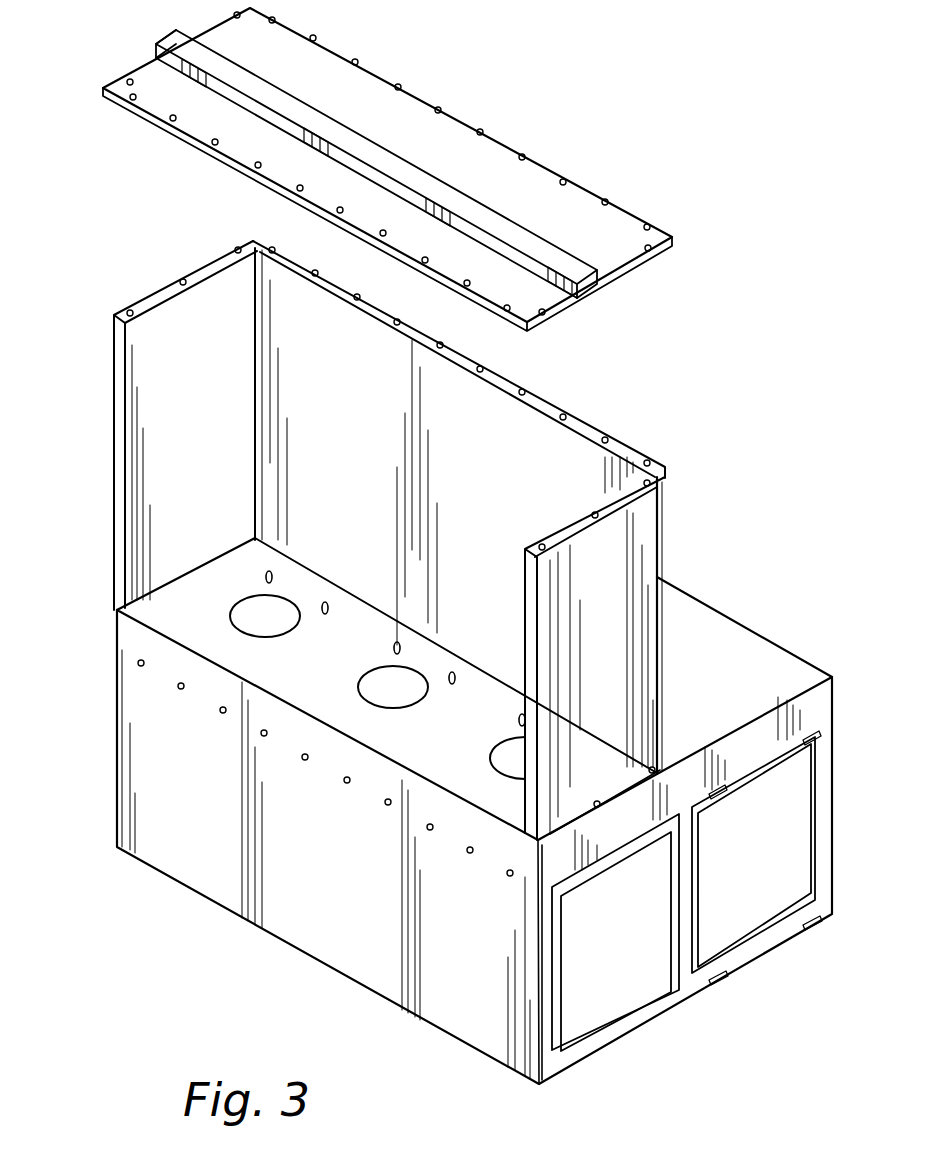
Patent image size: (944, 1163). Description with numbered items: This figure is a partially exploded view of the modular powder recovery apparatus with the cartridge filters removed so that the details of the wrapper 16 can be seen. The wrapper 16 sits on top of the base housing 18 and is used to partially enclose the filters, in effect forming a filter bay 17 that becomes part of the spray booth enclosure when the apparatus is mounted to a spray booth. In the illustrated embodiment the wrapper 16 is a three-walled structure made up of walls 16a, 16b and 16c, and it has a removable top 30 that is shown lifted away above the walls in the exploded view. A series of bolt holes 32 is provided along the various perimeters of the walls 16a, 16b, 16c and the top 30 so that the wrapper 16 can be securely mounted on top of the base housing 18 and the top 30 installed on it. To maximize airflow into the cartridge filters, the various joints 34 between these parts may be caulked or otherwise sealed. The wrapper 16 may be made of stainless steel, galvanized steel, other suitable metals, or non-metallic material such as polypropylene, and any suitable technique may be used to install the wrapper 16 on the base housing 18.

The wrapper 16 is at (93, 44).
The wall 16a is at (617, 560).
The wall 16b is at (581, 467).
The wall 16c is at (197, 317).
The filter bay 17 is at (324, 646).
The base housing 18 is at (318, 902).
The removable top 30 is at (448, 135).
The bolt holes 32 is at (607, 193).
The joints 34 is at (220, 563).